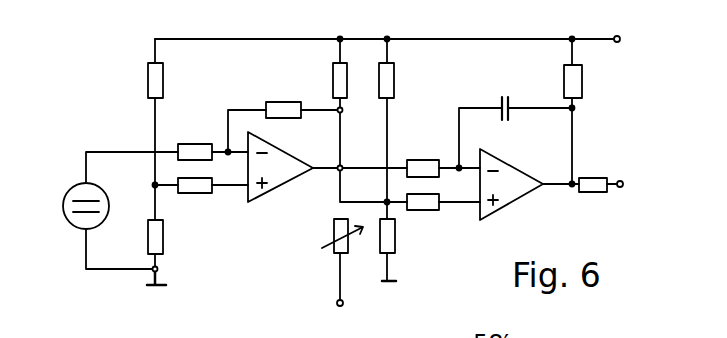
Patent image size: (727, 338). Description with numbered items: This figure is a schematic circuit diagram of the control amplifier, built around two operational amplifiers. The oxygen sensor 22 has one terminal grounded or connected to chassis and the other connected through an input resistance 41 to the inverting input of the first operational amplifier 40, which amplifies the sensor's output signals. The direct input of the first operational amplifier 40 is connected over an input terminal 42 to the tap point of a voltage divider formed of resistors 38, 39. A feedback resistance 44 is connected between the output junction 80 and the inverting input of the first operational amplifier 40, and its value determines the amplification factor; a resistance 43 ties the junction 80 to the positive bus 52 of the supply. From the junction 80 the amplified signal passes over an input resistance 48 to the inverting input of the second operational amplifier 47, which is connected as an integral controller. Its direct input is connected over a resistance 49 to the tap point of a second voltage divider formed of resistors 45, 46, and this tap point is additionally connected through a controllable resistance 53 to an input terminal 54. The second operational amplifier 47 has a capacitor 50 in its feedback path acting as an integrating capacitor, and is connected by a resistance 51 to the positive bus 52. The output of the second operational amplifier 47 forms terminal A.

The oxygen sensor 22 is at (78, 232).
The resistor 38 is at (163, 80).
The resistor 39 is at (163, 237).
The first operational amplifier 40 is at (293, 183).
The input resistance 41 is at (198, 144).
The input terminal 42 is at (200, 193).
The resistance 43 is at (333, 72).
The feedback resistance 44 is at (285, 102).
The resistor 45 is at (394, 80).
The resistor 46 is at (395, 237).
The second operational amplifier 47 is at (515, 192).
The input resistance 48 is at (424, 160).
The resistance 49 is at (435, 208).
The capacitor 50 is at (510, 100).
The resistance 51 is at (564, 77).
The positive bus 52 is at (506, 38).
The controllable resistance 53 is at (334, 248).
The input terminal 54 is at (344, 303).
The output junction 80 is at (342, 170).
The terminal A is at (622, 187).